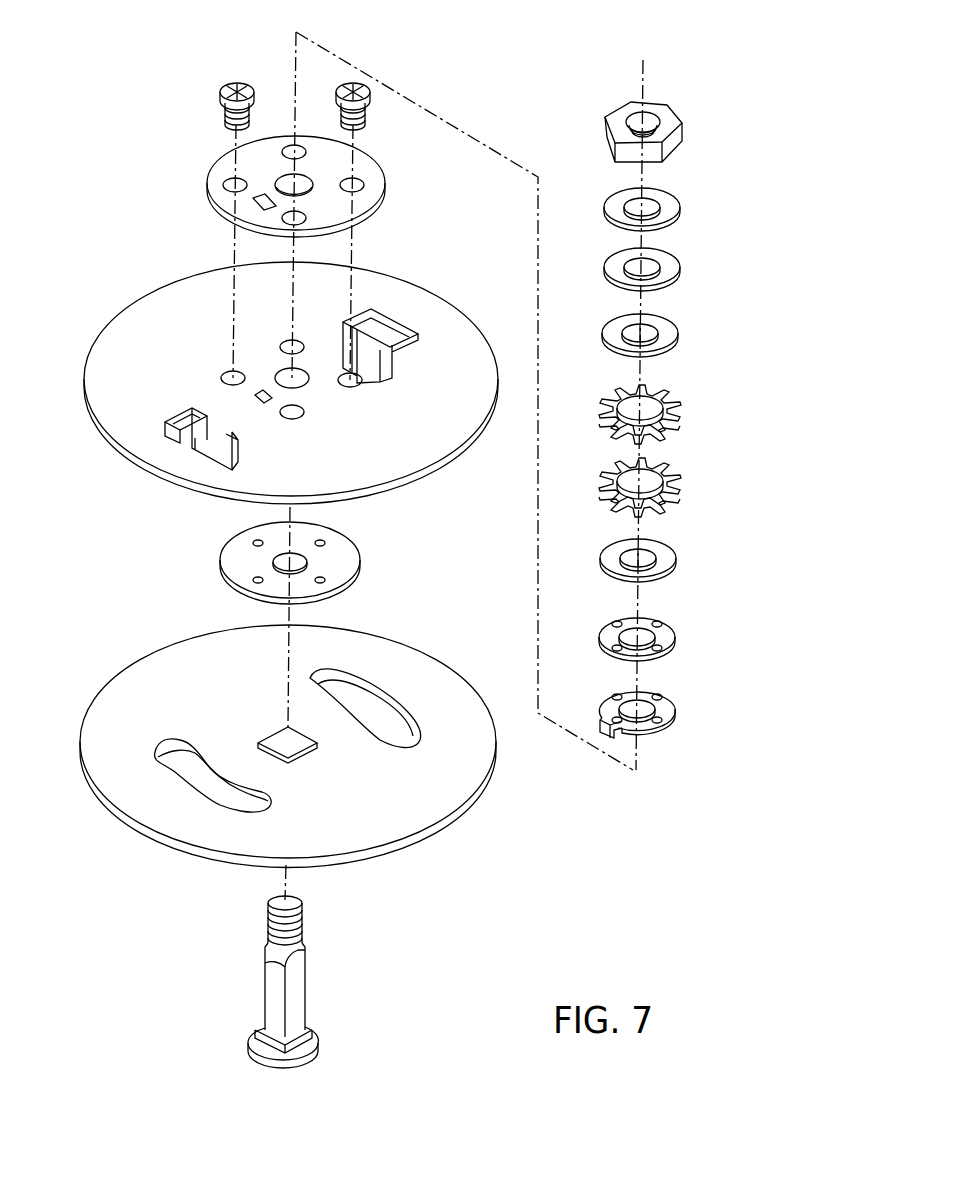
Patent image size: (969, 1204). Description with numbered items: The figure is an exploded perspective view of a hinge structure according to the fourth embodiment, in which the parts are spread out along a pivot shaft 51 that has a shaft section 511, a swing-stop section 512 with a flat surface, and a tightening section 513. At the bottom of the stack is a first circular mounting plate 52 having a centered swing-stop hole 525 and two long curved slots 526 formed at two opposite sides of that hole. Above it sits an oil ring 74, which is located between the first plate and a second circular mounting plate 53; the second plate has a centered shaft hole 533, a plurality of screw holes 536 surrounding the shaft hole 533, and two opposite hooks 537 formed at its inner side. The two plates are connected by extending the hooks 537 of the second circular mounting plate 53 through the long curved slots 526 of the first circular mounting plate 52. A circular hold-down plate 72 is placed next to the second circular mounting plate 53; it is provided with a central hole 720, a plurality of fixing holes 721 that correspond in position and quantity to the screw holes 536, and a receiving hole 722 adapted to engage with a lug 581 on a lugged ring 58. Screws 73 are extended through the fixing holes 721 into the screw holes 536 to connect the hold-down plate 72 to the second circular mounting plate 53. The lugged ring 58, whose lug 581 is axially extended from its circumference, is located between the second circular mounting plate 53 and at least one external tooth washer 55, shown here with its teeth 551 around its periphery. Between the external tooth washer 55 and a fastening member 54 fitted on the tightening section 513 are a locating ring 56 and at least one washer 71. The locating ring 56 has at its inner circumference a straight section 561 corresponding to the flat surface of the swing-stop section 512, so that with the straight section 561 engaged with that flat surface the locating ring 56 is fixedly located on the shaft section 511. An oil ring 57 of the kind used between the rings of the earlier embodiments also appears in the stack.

The pivot shaft 51 is at (350, 983).
The shaft section 511 is at (275, 995).
The swing-stop section 512 is at (300, 1000).
The tightening section 513 is at (268, 930).
The first circular mounting plate 52 is at (455, 852).
The swing-stop hole 525 is at (280, 740).
The long curved slots 526 is at (372, 705).
The second circular mounting plate 53 is at (125, 295).
The shaft hole 533 is at (278, 378).
The screw holes 536 is at (302, 413).
The hooks 537 is at (405, 368).
The fastening member 54 is at (658, 113).
The external tooth washer 55 is at (700, 480).
The teeth of star washers 551 is at (612, 480).
The locating ring 56 is at (675, 332).
The straight section 561 is at (638, 333).
The oil ring 57 is at (666, 635).
The lugged ring 58 is at (666, 707).
The lug 581 is at (604, 735).
The washer 71 is at (672, 265).
The circular hold-down plate 72 is at (185, 140).
The central hole 720 is at (307, 186).
The fixing holes 721 is at (235, 186).
The receiving hole 722 is at (258, 201).
The screws 73 is at (237, 83).
The oil ring 74 is at (242, 565).